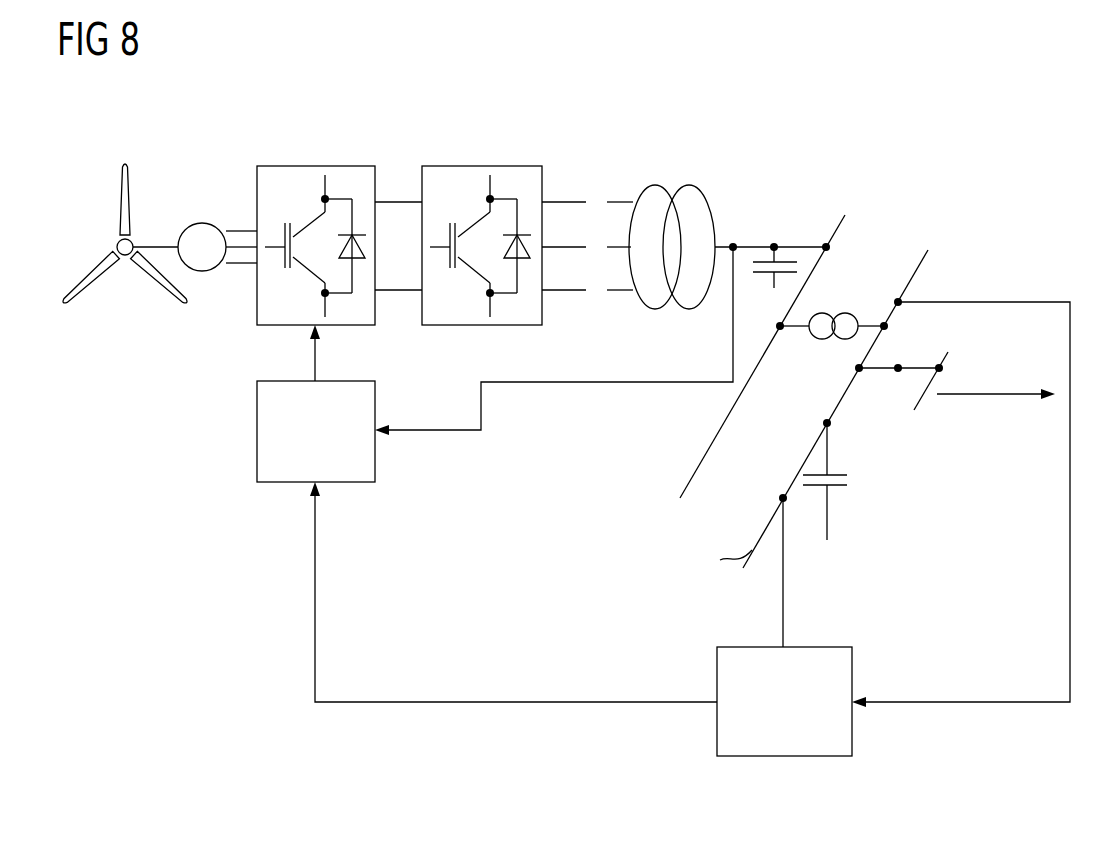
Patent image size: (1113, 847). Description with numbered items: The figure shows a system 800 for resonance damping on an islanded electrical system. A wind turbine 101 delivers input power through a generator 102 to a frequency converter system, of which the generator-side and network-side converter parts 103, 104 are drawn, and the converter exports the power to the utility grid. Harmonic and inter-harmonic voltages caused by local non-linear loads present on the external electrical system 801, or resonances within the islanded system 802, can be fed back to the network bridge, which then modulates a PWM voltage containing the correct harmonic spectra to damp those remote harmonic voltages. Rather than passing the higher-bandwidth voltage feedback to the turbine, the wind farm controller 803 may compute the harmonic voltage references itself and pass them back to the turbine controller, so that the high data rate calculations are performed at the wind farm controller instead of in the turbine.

The wind turbine 101 is at (122, 212).
The generator 102 is at (203, 223).
The frequency converter system part 103 is at (315, 166).
The frequency converter system part 104 is at (453, 325).
The system for resonance damping 800 is at (1012, 124).
The external electrical system 801 is at (995, 394).
The islanded system resonance 802 is at (833, 485).
The wind farm controller 803 is at (785, 756).